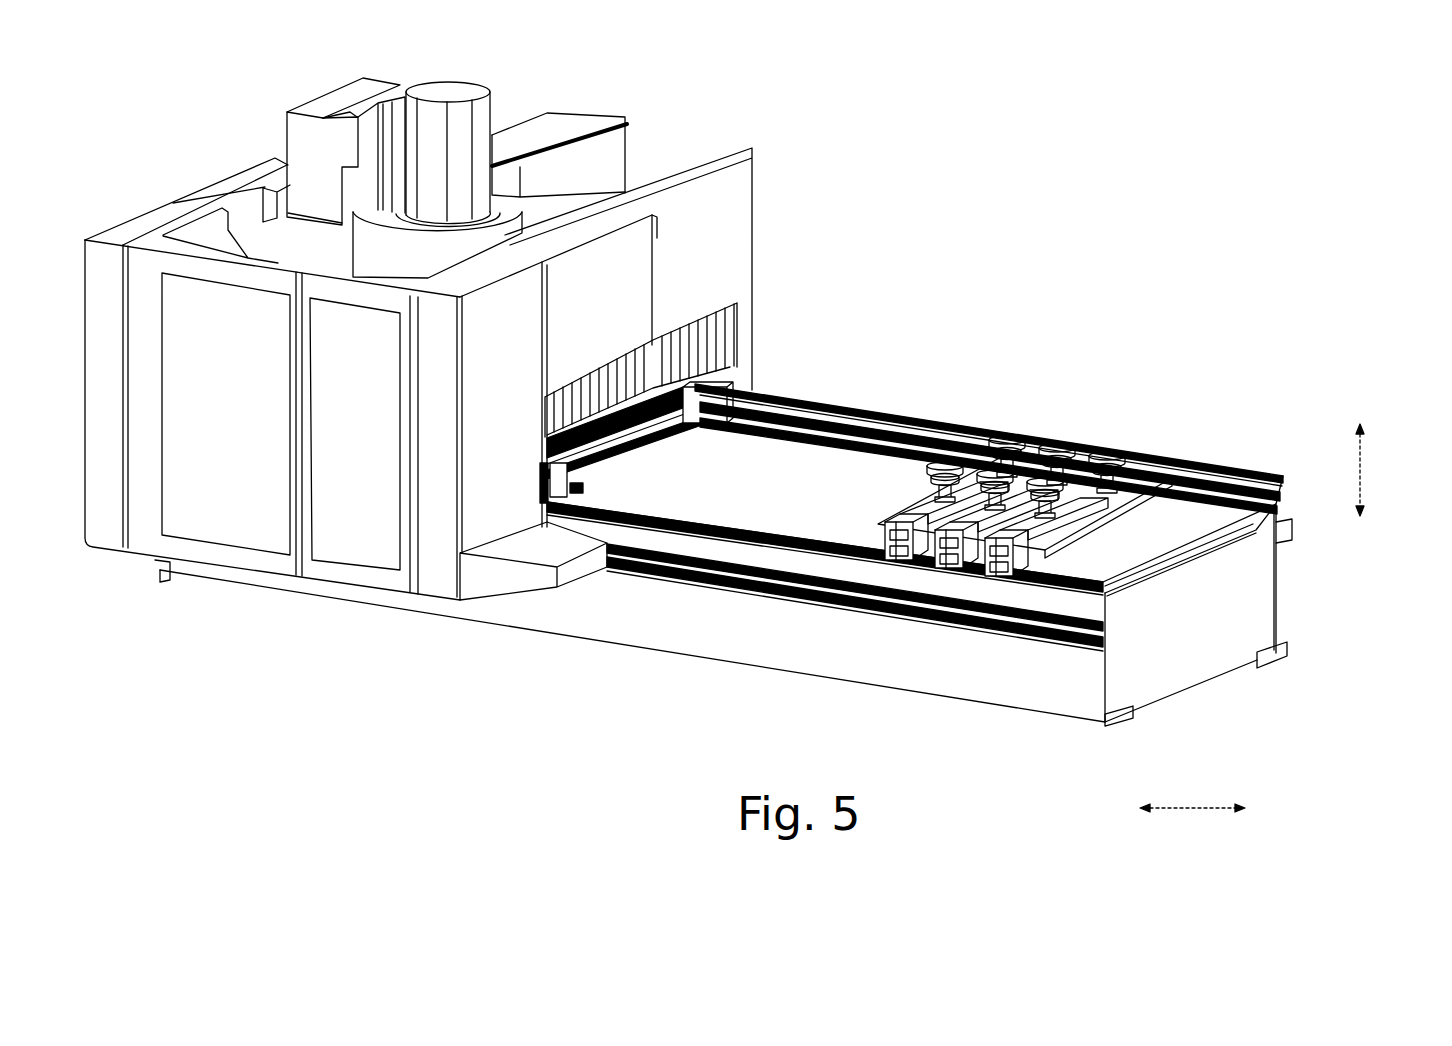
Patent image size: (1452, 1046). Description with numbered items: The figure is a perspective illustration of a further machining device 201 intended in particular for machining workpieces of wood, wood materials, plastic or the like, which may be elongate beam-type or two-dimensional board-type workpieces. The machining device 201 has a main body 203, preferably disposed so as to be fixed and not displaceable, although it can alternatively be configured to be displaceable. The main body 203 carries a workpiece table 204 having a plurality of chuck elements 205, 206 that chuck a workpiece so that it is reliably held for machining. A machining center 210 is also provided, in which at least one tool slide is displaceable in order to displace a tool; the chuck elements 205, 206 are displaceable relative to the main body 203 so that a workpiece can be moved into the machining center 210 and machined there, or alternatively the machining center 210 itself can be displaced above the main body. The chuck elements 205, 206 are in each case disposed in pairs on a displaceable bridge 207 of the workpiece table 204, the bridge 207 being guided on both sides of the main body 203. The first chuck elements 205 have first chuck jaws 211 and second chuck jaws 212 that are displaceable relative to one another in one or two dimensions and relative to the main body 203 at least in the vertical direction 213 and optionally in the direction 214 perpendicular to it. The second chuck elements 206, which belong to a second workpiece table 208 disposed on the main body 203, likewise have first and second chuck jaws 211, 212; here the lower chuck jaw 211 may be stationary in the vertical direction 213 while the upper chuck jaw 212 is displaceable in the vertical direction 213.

The machining device 201 is at (915, 197).
The main body 203 is at (857, 460).
The workpiece table 204 is at (1117, 408).
The first chuck elements 205 is at (1017, 430).
The second chuck elements 206 is at (1042, 505).
The displaceable bridge 207 is at (1105, 515).
The second workpiece table 208 is at (980, 583).
The machining center 210 is at (672, 146).
The first chuck jaws 211 is at (928, 482).
The second chuck jaws 212 is at (941, 462).
The vertical direction 213 is at (1372, 466).
The perpendicular direction 214 is at (1192, 825).